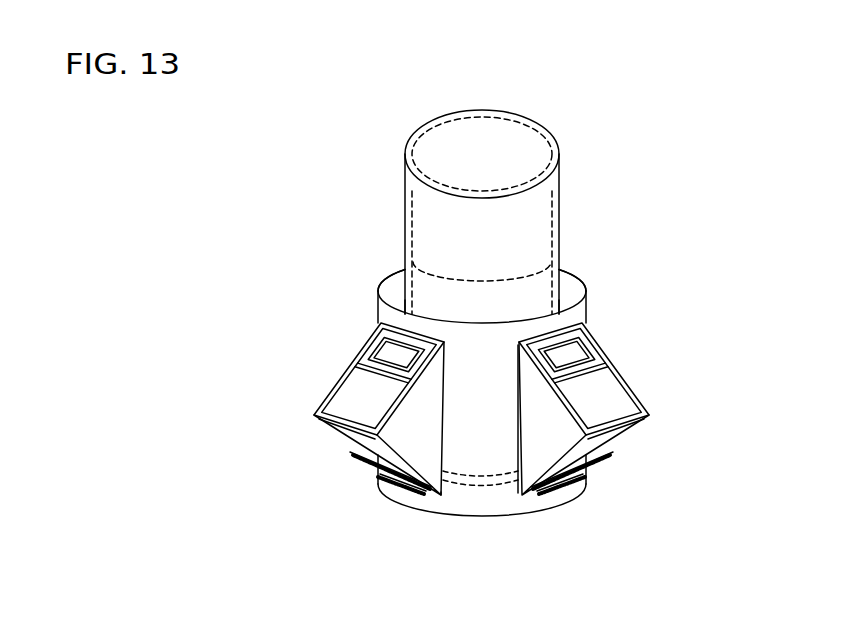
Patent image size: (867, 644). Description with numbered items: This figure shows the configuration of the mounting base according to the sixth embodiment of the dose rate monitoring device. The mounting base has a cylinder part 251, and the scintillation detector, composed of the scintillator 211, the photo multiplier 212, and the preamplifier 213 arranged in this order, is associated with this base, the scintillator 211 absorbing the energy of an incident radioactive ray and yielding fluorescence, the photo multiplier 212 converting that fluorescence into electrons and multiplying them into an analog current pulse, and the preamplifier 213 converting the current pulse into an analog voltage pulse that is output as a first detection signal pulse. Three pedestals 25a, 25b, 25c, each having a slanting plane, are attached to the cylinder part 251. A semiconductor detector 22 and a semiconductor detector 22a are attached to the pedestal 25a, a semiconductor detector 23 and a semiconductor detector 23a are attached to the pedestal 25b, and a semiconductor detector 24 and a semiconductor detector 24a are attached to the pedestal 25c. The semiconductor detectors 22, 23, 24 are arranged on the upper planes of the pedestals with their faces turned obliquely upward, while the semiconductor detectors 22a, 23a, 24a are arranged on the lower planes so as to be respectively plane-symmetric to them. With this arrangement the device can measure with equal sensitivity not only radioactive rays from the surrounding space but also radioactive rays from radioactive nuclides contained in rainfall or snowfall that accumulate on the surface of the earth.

The semiconductor detector 22 is at (594, 424).
The semiconductor detector 22a is at (608, 458).
The semiconductor detector 23 is at (358, 401).
The semiconductor detector 23a is at (352, 458).
The semiconductor detector 24 is at (380, 299).
The semiconductor detector 24a is at (375, 321).
The pedestal 25a is at (532, 412).
The pedestal 25b is at (432, 424).
The pedestal 25c is at (392, 288).
The scintillator 211 is at (449, 185).
The photo multiplier 212 is at (560, 290).
The preamplifier 213 is at (477, 110).
The cylinder part 251 is at (477, 518).